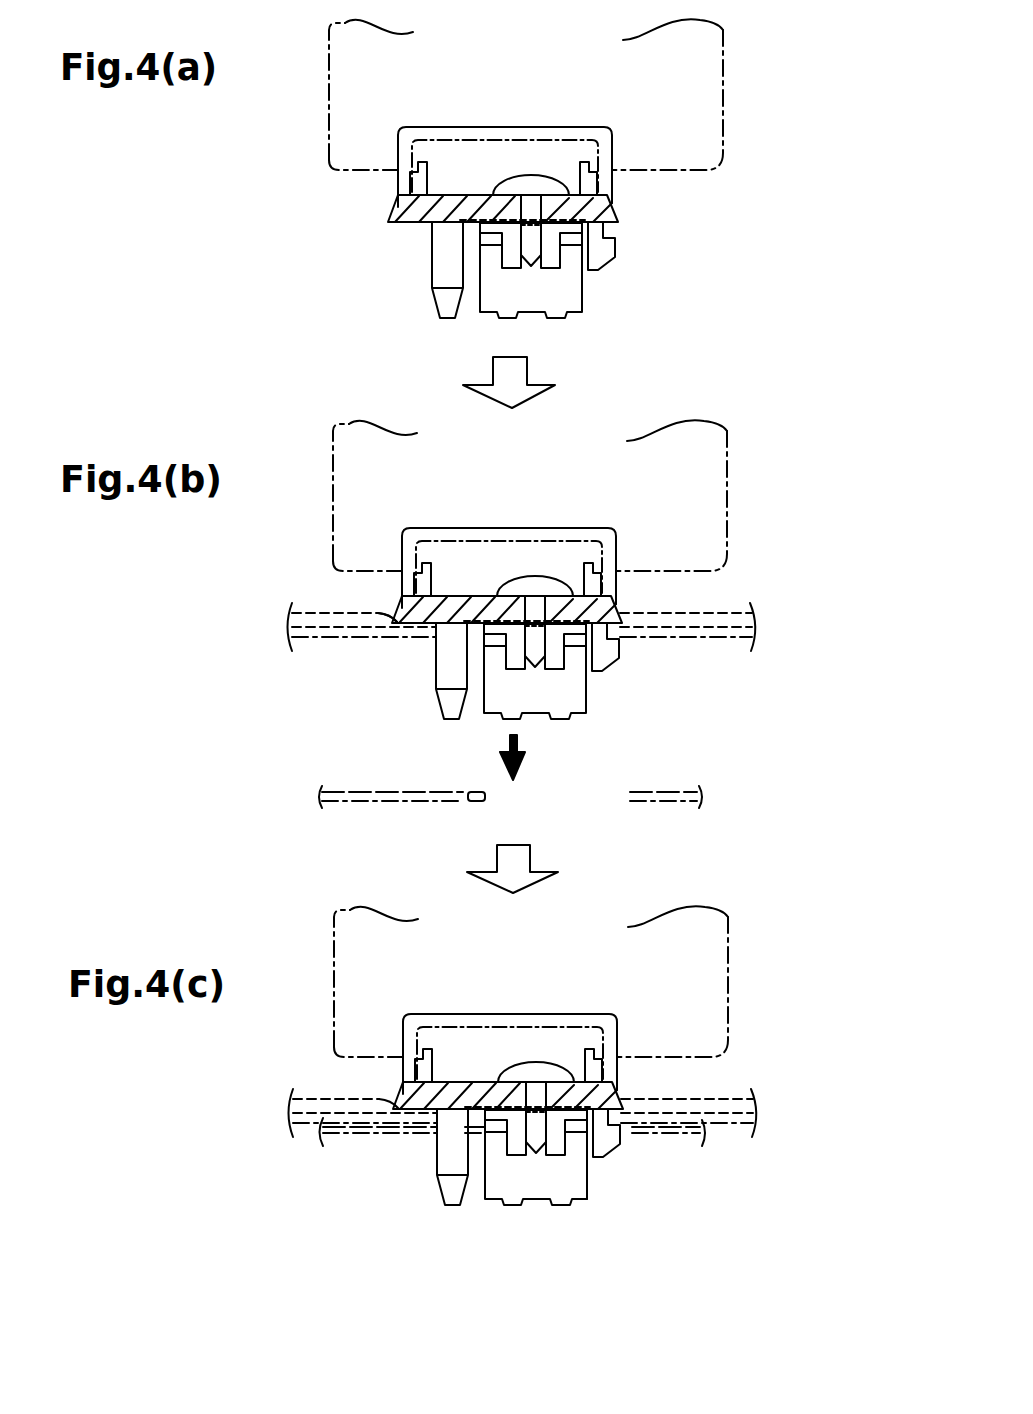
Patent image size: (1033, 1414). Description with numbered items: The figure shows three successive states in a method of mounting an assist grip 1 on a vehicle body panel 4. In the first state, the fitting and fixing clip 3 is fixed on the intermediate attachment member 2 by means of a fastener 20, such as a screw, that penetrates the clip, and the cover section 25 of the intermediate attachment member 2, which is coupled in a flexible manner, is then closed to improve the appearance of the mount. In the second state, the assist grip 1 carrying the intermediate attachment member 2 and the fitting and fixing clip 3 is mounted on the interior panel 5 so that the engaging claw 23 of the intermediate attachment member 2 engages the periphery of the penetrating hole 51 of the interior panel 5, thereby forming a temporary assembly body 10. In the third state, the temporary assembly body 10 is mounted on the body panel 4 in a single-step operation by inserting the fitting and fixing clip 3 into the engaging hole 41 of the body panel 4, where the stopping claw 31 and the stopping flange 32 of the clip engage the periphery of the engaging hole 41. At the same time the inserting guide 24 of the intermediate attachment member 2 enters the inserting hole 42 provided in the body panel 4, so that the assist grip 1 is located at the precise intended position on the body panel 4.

In FIG. 4A, the assist grip 1 is at (672, 80).
In FIG. 4B, the assist grip 1 is at (377, 473).
In FIG. 4C, the assist grip 1 is at (352, 953).
In FIG. 4A, the intermediate attachment member 2 is at (367, 210).
In FIG. 4B, the intermediate attachment member 2 is at (380, 597).
In FIG. 4C, the intermediate attachment member 2 is at (360, 1081).
In FIG. 4A, the fitting and fixing clip 3 is at (567, 287).
In FIG. 4B, the fitting and fixing clip 3 is at (577, 700).
In FIG. 4C, the fitting and fixing clip 3 is at (527, 1217).
In FIG. 4B, the body panel 4 is at (683, 792).
In FIG. 4C, the body panel 4 is at (678, 1140).
In FIG. 4B, the interior panel 5 is at (738, 604).
In FIG. 4C, the interior panel 5 is at (718, 1098).
In FIG. 4B, the temporary assembly body 10 is at (762, 523).
In FIG. 4A, the fastener 20 is at (534, 183).
In FIG. 4B, the fastener 20 is at (535, 592).
In FIG. 4B, the engaging claw 23 is at (605, 650).
In FIG. 4B, the inserting guide 24 is at (448, 668).
In FIG. 4B, the cover section 25 is at (458, 532).
In FIG. 4C, the stopping claw 31 is at (582, 1142).
In FIG. 4C, the stopping flange 32 is at (562, 1080).
In FIG. 4B, the engaging hole 41 is at (565, 798).
In FIG. 4B, the inserting hole 42 is at (467, 800).
In FIG. 4B, the penetrating hole 51 is at (469, 628).